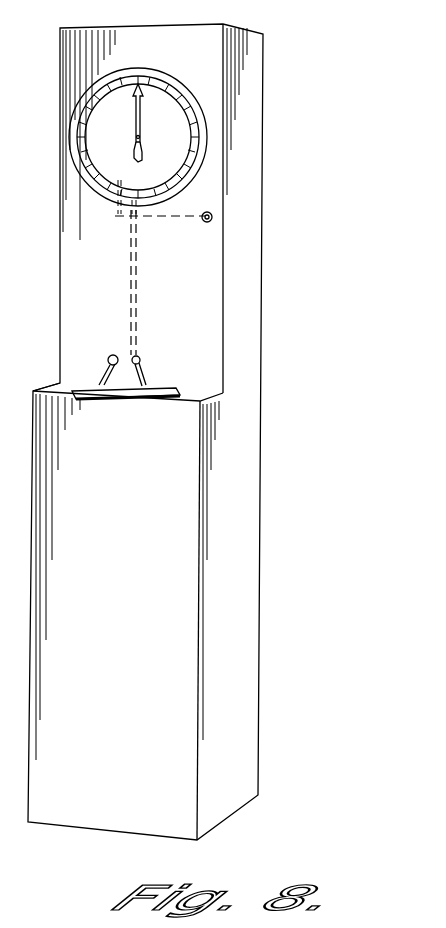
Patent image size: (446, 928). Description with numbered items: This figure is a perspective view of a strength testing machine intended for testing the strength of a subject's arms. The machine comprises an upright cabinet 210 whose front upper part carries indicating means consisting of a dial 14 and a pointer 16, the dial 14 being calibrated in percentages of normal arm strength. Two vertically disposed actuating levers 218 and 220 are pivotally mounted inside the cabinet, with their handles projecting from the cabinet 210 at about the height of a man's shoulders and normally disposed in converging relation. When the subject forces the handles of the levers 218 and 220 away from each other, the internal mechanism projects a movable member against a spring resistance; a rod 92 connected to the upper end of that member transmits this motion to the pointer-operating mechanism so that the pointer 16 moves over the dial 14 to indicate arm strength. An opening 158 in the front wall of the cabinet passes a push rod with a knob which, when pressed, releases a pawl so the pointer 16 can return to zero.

The dial 14 is at (106, 154).
The pointer 16 is at (136, 112).
The rod 92 is at (139, 287).
The opening 158 is at (213, 215).
The cabinet 210 is at (252, 537).
The actuating lever 218 is at (108, 360).
The actuating lever 220 is at (142, 360).